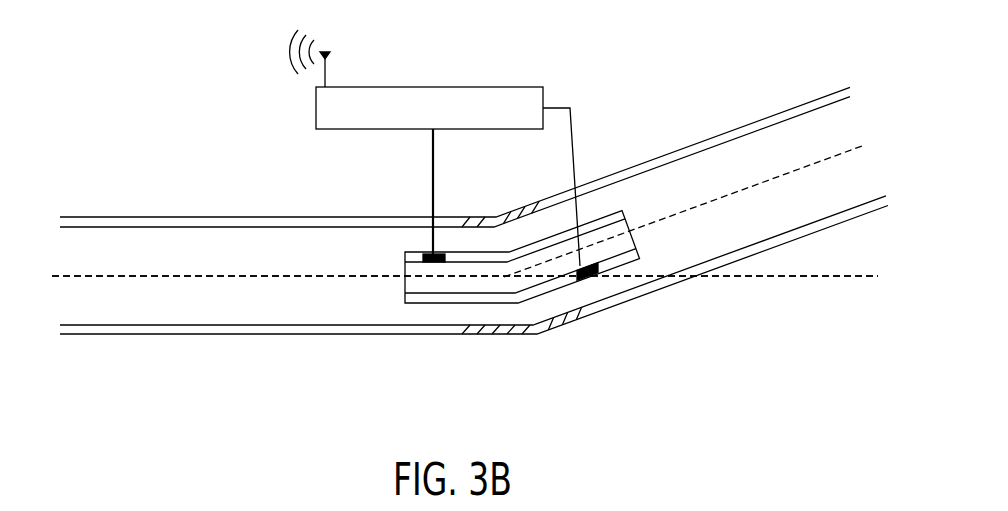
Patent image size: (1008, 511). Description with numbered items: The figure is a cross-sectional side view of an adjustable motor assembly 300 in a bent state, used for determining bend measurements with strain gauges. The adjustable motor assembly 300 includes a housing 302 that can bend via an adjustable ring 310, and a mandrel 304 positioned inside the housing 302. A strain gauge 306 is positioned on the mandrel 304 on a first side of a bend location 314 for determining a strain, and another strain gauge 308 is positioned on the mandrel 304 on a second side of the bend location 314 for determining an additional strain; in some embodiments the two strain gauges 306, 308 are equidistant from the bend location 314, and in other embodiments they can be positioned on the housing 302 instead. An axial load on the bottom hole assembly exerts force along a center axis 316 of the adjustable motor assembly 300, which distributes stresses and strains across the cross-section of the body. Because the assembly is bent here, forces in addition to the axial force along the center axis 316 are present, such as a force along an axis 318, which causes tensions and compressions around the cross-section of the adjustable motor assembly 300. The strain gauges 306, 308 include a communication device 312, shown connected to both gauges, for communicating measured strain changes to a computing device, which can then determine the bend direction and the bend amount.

The adjustable motor assembly 300 is at (121, 197).
The housing 302 is at (300, 214).
The mandrel 304 is at (432, 306).
The strain gauge 306 is at (430, 250).
The strain gauge 308 is at (588, 282).
The adjustable ring 310 is at (494, 212).
The communication device 312 is at (435, 87).
The bend location 314 is at (504, 340).
The center axis 316 is at (779, 283).
The axis 318 is at (739, 188).